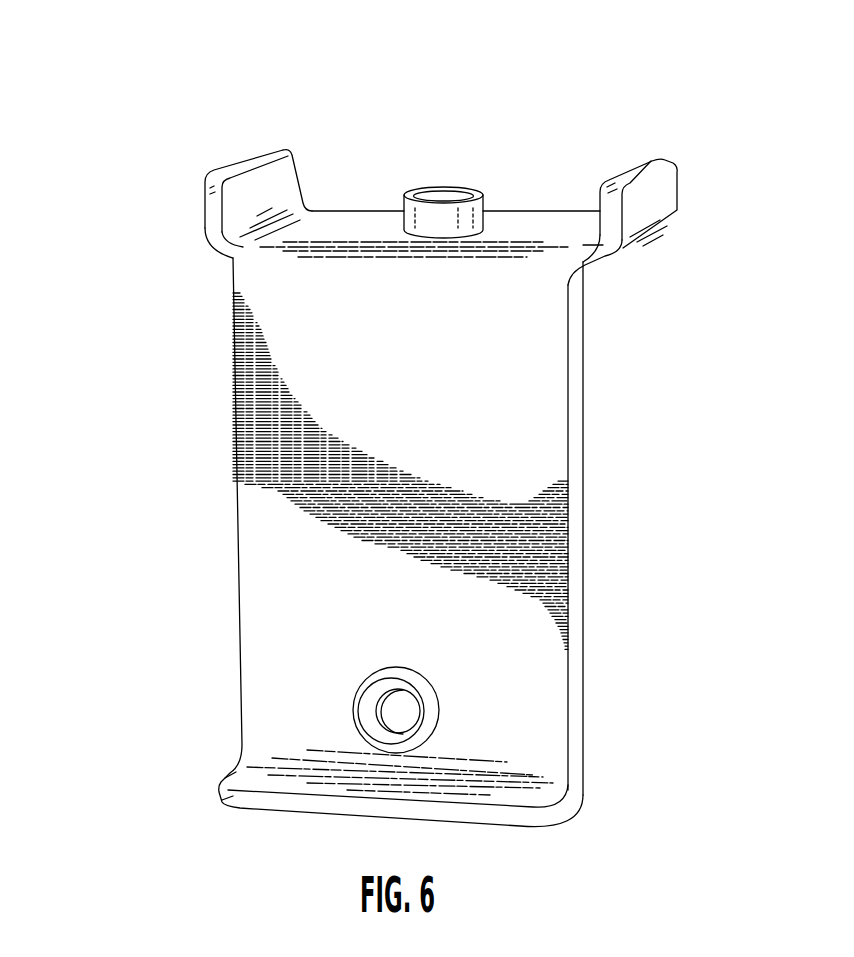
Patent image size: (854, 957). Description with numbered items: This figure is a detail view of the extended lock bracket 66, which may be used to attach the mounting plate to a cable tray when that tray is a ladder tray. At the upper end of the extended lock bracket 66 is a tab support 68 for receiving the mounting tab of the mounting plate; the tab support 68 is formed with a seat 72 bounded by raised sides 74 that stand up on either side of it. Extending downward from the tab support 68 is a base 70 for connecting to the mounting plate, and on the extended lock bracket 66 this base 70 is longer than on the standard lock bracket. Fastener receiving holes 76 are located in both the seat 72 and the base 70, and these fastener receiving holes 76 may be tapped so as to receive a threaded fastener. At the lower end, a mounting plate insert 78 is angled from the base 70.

The extended lock bracket 66 is at (576, 356).
The tab support 68 is at (212, 204).
The base 70 is at (575, 560).
The seat 72 is at (556, 212).
The raised sides 74 is at (233, 164).
The fastener receiving holes 76 is at (464, 186).
The mounting plate insert 78 is at (557, 806).